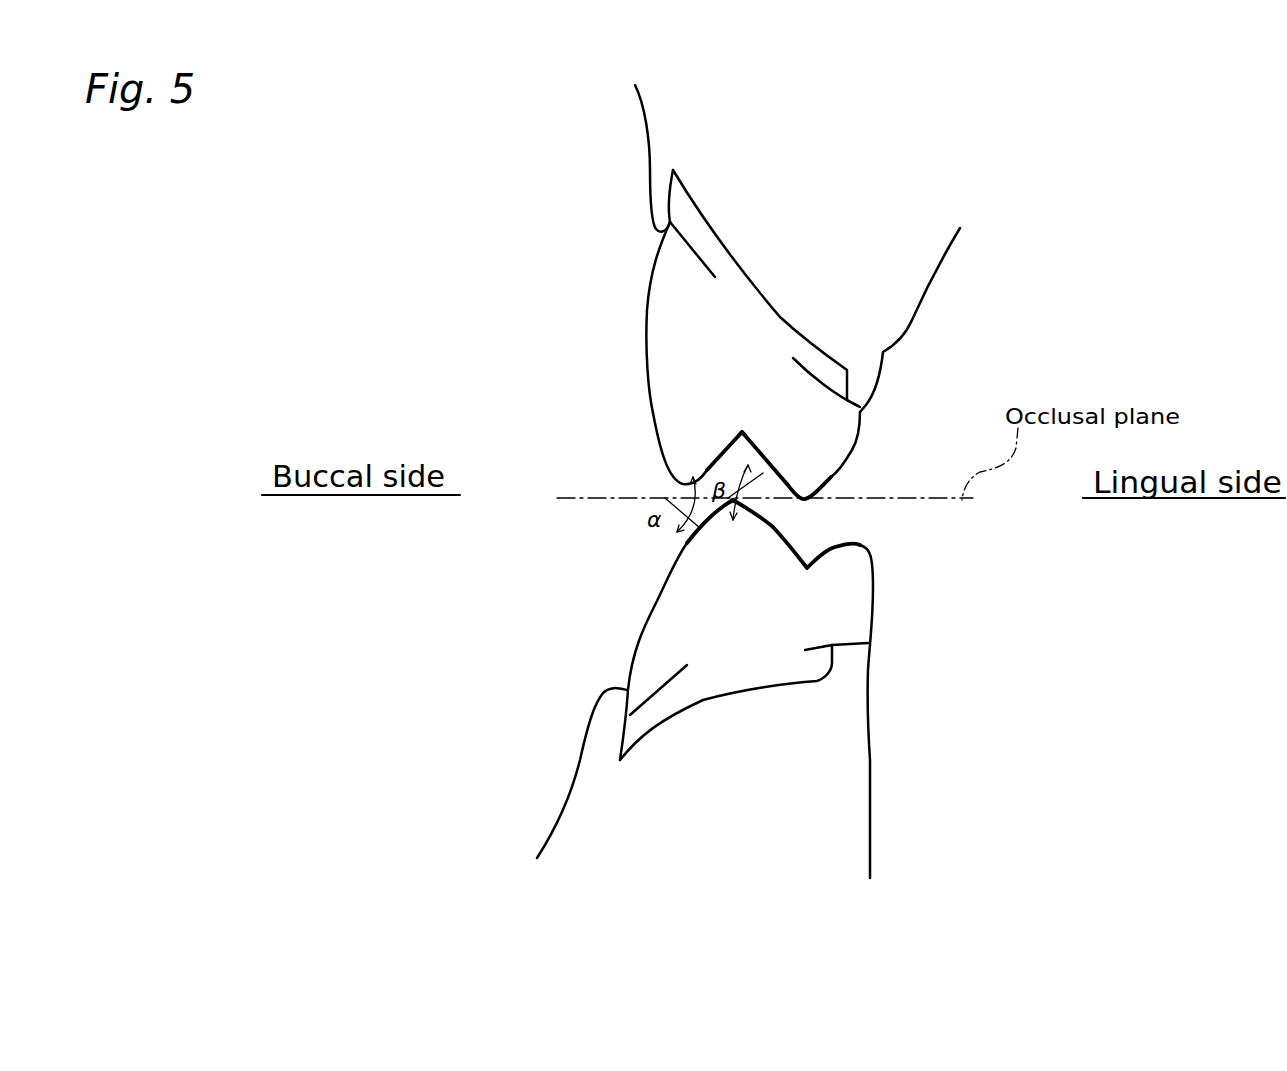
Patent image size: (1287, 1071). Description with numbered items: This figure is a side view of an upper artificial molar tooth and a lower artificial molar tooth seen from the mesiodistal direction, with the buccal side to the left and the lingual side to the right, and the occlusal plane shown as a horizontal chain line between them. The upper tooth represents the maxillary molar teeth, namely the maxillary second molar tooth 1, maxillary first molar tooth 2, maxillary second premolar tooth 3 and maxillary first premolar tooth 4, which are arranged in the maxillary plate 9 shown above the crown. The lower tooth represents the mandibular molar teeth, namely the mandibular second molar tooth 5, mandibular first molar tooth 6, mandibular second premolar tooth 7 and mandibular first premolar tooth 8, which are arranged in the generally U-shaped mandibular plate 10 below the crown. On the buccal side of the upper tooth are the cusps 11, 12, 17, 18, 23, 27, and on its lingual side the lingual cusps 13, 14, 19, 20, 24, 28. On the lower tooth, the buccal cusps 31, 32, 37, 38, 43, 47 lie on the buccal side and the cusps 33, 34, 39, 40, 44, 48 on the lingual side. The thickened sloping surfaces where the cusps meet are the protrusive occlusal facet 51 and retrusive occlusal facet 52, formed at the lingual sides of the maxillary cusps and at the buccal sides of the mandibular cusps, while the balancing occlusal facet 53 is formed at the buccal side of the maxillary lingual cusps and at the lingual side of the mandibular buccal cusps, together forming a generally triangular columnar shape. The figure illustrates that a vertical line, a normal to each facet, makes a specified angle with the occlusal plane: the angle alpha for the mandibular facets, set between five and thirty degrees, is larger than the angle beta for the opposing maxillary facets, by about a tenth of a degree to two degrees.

The maxillary second molar tooth 1 is at (755, 334).
The maxillary first molar tooth 2 is at (755, 334).
The maxillary second premolar tooth 3 is at (755, 334).
The maxillary first premolar tooth 4 is at (665, 290).
The mandibular second molar tooth 5 is at (757, 689).
The mandibular first molar tooth 6 is at (757, 689).
The mandibular second premolar tooth 7 is at (757, 689).
The mandibular first premolar tooth 8 is at (648, 635).
The maxillary plate 9 is at (667, 130).
The mandibular plate 10 is at (583, 795).
The cusp 11 is at (483, 444).
The distal cusp 12 is at (483, 444).
The cusp 17 is at (483, 444).
The cusp 18 is at (483, 444).
The cusp 23 is at (483, 444).
The cusp 27 is at (665, 448).
The lingual cusp 13 is at (1018, 423).
The distal cusp 14 is at (1018, 423).
The lingual cusp 19 is at (1018, 423).
The lingual cusp 20 is at (1018, 423).
The lingual cusp 24 is at (1018, 423).
The lingual cusp 28 is at (823, 448).
The buccal cusp 31 is at (496, 541).
The buccal cusp 32 is at (496, 541).
The buccal cusp 37 is at (496, 541).
The buccal cusp 38 is at (496, 541).
The buccal cusp 43 is at (496, 541).
The buccal cusp 47 is at (695, 547).
The cusp 33 is at (1014, 576).
The cusp 34 is at (1014, 576).
The cusp 39 is at (1014, 576).
The cusp 40 is at (1014, 576).
The cusp 44 is at (1014, 576).
The lingual cusp 48 is at (860, 572).
The protrusive occlusal facet 51 is at (756, 452).
The retrusive occlusal facet 52 is at (722, 458).
The balancing occlusal facet 53 is at (770, 475).